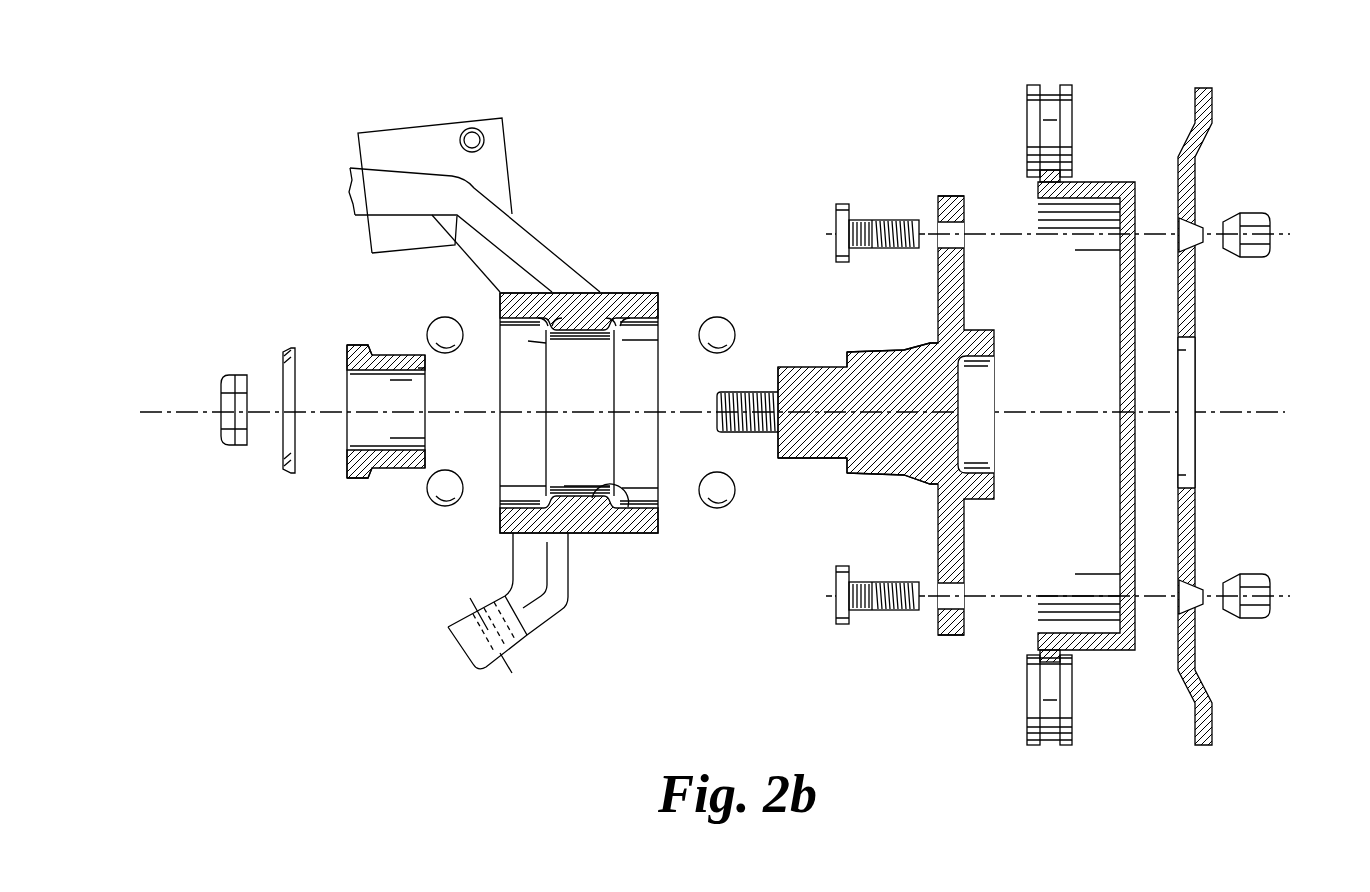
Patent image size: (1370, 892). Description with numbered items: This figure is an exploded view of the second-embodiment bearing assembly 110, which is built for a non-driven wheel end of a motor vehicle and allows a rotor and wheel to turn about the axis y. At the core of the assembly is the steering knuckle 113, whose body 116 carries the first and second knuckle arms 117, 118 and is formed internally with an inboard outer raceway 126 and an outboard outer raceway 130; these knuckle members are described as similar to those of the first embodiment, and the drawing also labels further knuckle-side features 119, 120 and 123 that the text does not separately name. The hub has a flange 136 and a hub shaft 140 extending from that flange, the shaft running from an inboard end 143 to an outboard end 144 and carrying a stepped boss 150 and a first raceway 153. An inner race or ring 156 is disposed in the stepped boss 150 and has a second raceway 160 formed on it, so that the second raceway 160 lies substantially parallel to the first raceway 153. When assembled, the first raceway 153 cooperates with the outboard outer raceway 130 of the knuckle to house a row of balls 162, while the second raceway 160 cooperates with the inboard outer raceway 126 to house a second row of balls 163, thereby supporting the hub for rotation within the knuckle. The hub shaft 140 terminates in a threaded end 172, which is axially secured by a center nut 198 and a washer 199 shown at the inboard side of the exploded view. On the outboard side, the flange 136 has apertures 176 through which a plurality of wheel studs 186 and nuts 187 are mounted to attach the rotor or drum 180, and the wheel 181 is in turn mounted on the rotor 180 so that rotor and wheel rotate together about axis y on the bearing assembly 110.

The bearing assembly 110 is at (210, 114).
The steering knuckle 113 is at (498, 522).
The body 116 is at (600, 300).
The first knuckle arm 117 is at (508, 227).
The second knuckle arm 118 is at (565, 598).
The mounting bracket plate 119 is at (440, 162).
The bearing ball 120 is at (626, 508).
The bearing housing 123 is at (579, 380).
The inboard outer raceway 126 is at (545, 328).
The outboard outer raceway 130 is at (660, 323).
The flange 136 is at (937, 290).
The hub shaft 140 is at (856, 352).
The inboard end 143 is at (790, 458).
The outboard end 144 is at (930, 484).
The stepped boss 150 is at (807, 367).
The first raceway 153 is at (867, 348).
The inner race 156 is at (382, 375).
The second raceway 160 is at (387, 352).
The balls 162 is at (715, 327).
The balls 163 is at (437, 331).
The threaded end 172 is at (747, 437).
The apertures 176 is at (957, 228).
The rotor 180 is at (1105, 181).
The wheel 181 is at (1210, 131).
The wheel studs 186 is at (858, 216).
The nuts 187 is at (1265, 213).
The center nut 198 is at (237, 447).
The washer 199 is at (287, 350).